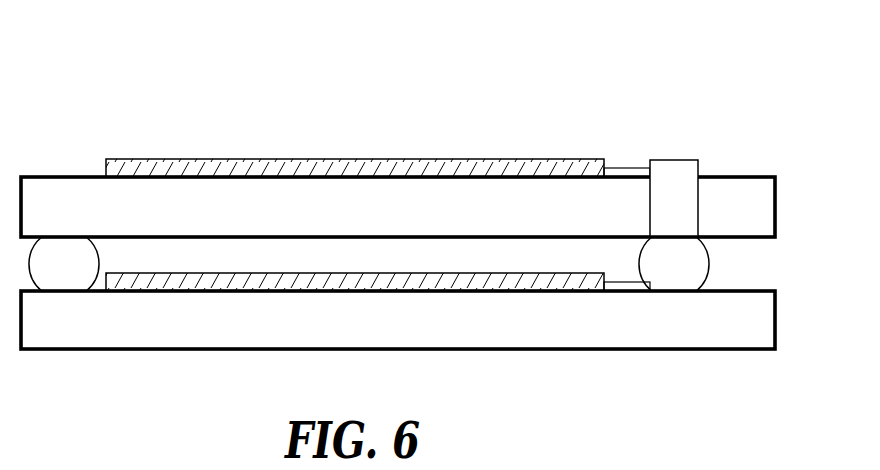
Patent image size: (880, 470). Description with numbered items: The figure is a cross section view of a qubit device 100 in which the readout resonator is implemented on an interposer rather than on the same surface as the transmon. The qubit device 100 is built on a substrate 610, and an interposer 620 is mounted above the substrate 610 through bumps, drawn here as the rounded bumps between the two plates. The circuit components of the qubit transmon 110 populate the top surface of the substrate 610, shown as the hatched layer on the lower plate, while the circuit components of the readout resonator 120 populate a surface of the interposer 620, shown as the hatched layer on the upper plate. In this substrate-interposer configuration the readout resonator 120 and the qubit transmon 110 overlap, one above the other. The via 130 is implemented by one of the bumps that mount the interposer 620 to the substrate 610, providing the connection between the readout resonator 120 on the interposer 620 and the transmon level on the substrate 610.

The qubit device 100 is at (138, 84).
The qubit transmon 110 is at (350, 273).
The readout resonator 120 is at (353, 160).
The via 130 is at (662, 160).
The substrate 610 is at (412, 332).
The interposer 620 is at (412, 218).